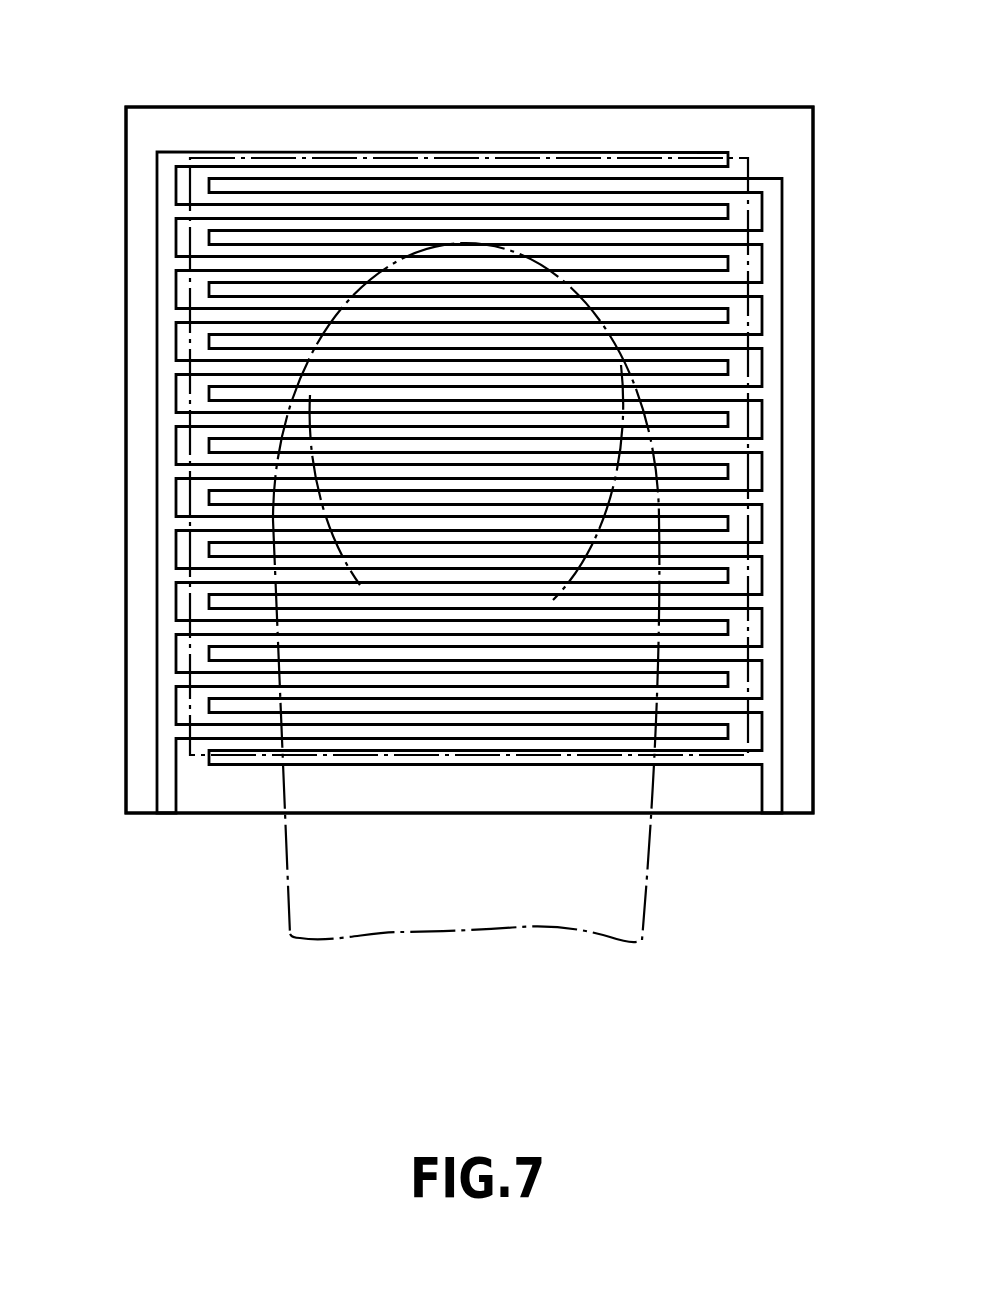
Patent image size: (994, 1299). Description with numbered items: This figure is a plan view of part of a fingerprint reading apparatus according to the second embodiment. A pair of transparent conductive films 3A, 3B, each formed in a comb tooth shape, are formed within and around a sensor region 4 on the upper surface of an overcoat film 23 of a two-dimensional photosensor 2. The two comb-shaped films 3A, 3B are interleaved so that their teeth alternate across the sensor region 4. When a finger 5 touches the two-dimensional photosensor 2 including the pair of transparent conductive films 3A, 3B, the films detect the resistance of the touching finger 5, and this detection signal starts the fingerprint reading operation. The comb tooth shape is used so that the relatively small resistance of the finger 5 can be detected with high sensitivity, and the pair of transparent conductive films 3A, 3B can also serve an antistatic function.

The two-dimensional photosensor 2 is at (722, 97).
The overcoat film 23 is at (628, 125).
The transparent conductive film 3A is at (168, 782).
The transparent conductive film 3B is at (773, 780).
The sensor region 4 is at (485, 158).
The finger 5 is at (620, 893).